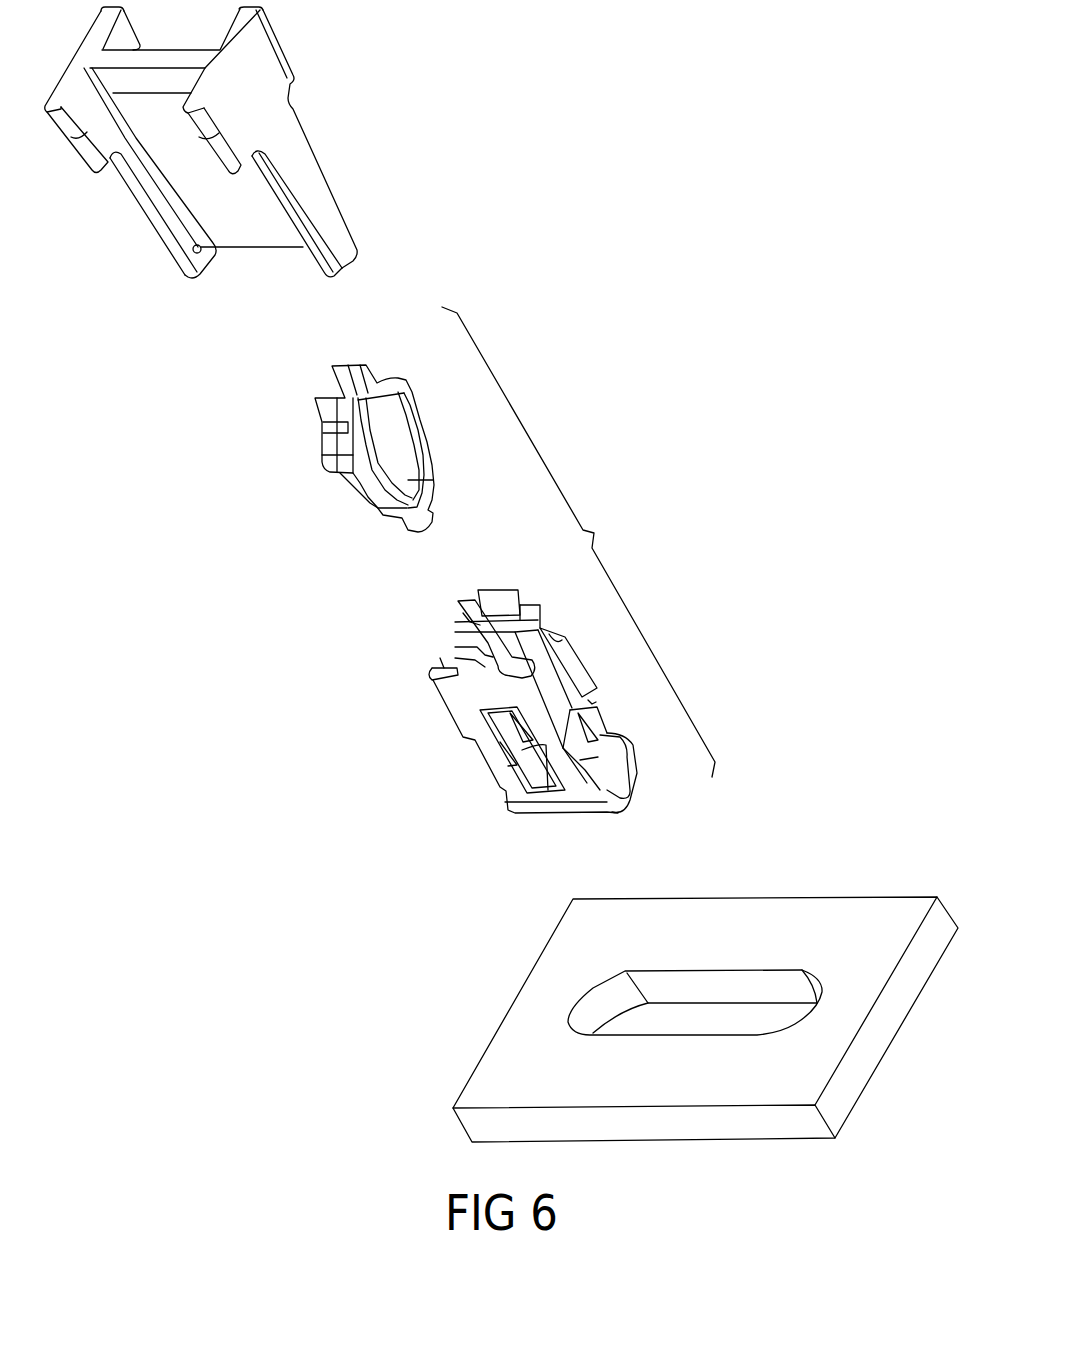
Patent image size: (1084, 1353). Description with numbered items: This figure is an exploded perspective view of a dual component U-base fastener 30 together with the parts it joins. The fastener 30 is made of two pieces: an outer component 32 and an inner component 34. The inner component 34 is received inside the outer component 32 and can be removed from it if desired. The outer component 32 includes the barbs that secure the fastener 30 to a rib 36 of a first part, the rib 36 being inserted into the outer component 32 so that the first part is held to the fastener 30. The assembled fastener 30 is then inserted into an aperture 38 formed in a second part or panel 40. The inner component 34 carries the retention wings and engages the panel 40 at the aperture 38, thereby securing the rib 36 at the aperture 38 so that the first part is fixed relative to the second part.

The dual component U-base fastener 30 is at (578, 542).
The outer component 32 is at (577, 667).
The inner component 34 is at (400, 391).
The rib 36 is at (292, 155).
The aperture 38 is at (713, 970).
The panel 40 is at (705, 1003).